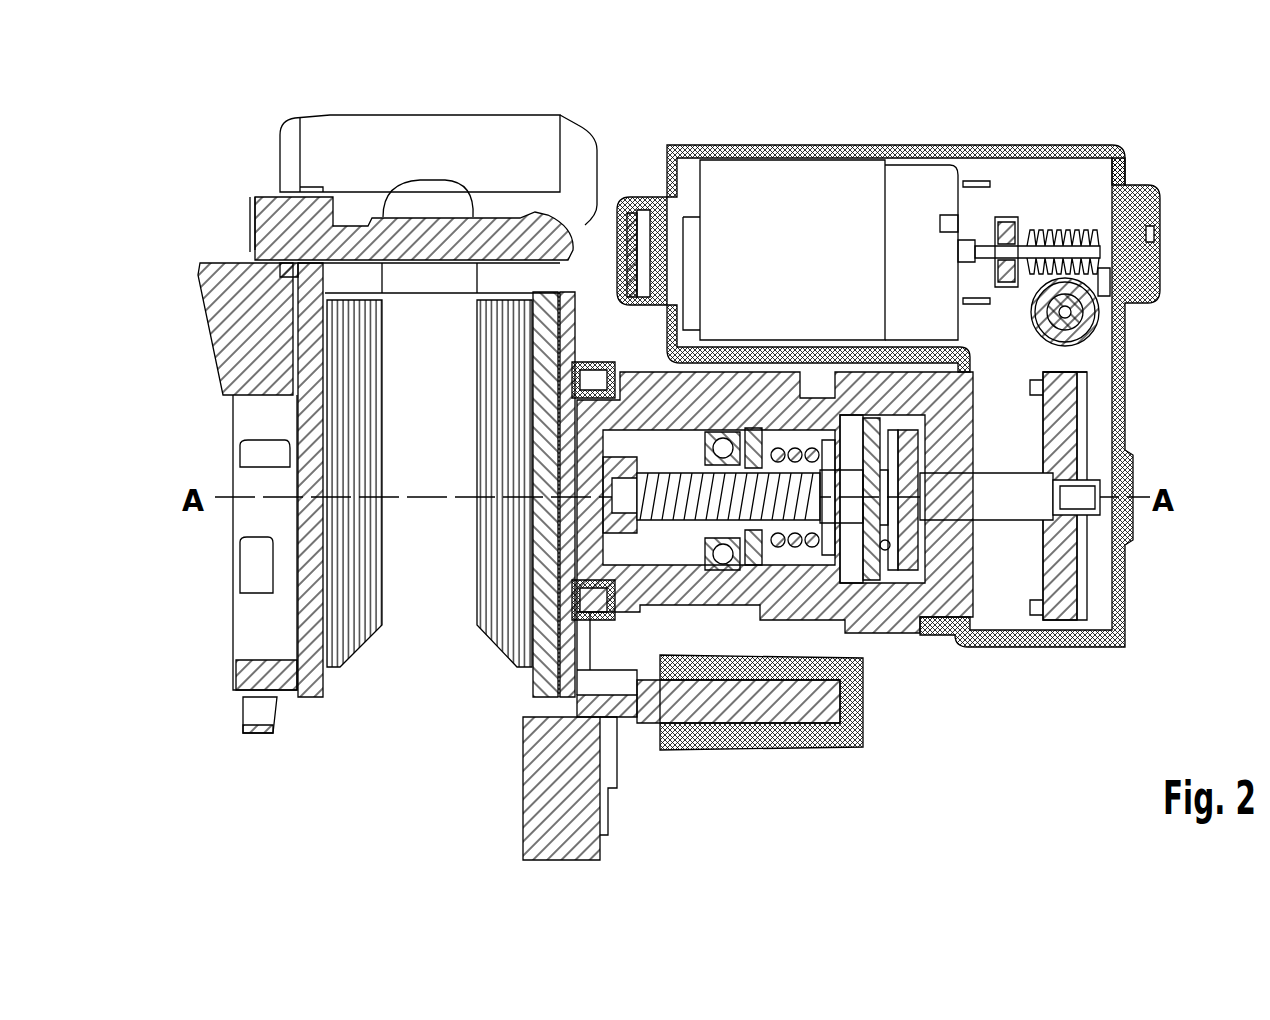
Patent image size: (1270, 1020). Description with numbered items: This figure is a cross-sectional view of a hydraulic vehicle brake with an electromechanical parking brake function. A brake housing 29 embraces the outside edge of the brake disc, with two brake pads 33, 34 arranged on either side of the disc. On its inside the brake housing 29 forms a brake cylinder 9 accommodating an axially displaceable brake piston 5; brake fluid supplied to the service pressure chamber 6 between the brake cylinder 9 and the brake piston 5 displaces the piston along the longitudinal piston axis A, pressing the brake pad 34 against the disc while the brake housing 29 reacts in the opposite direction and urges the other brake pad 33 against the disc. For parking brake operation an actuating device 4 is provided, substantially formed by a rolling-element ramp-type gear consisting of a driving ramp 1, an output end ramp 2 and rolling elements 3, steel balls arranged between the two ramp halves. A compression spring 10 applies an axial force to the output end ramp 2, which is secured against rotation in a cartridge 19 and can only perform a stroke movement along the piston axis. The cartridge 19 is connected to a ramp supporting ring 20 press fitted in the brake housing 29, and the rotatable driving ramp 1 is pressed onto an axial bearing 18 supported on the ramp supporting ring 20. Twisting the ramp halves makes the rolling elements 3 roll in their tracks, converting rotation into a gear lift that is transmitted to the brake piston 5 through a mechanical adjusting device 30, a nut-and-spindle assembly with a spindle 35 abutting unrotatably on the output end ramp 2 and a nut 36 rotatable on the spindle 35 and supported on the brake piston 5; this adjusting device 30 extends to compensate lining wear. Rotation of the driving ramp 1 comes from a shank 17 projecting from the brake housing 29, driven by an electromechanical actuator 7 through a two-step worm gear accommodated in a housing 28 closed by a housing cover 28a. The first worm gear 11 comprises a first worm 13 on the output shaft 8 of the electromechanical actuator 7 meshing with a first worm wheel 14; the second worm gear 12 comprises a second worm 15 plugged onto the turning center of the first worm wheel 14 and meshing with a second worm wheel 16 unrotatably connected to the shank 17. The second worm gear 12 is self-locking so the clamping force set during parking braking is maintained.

The driving ramp 1 is at (922, 578).
The output end ramp 2 is at (884, 552).
The rolling elements 3 is at (903, 555).
The actuating device 4 is at (772, 428).
The brake piston 5 is at (760, 442).
The service pressure chamber 6 is at (795, 447).
The electromechanical actuator 7 is at (801, 190).
The output shaft 8 is at (997, 244).
The brake cylinder 9 is at (813, 625).
The compression spring 10 is at (828, 440).
The first worm gear 11 is at (1104, 279).
The second worm gear 12 is at (1090, 372).
The first worm 13 is at (1072, 228).
The first worm wheel 14 is at (1100, 316).
The second worm 15 is at (1085, 332).
The second worm wheel 16 is at (1063, 595).
The shank 17 is at (1008, 510).
The axial bearing 18 is at (908, 430).
The cartridge 19 is at (850, 440).
The ramp supporting ring 20 is at (897, 437).
The housing 28 is at (1033, 145).
The housing cover 28a is at (1124, 400).
The brake housing 29 is at (290, 222).
The adjusting device 30 is at (648, 434).
The brake pad 33 is at (347, 620).
The brake pad 34 is at (507, 617).
The spindle 35 is at (723, 436).
The nut 36 is at (698, 640).